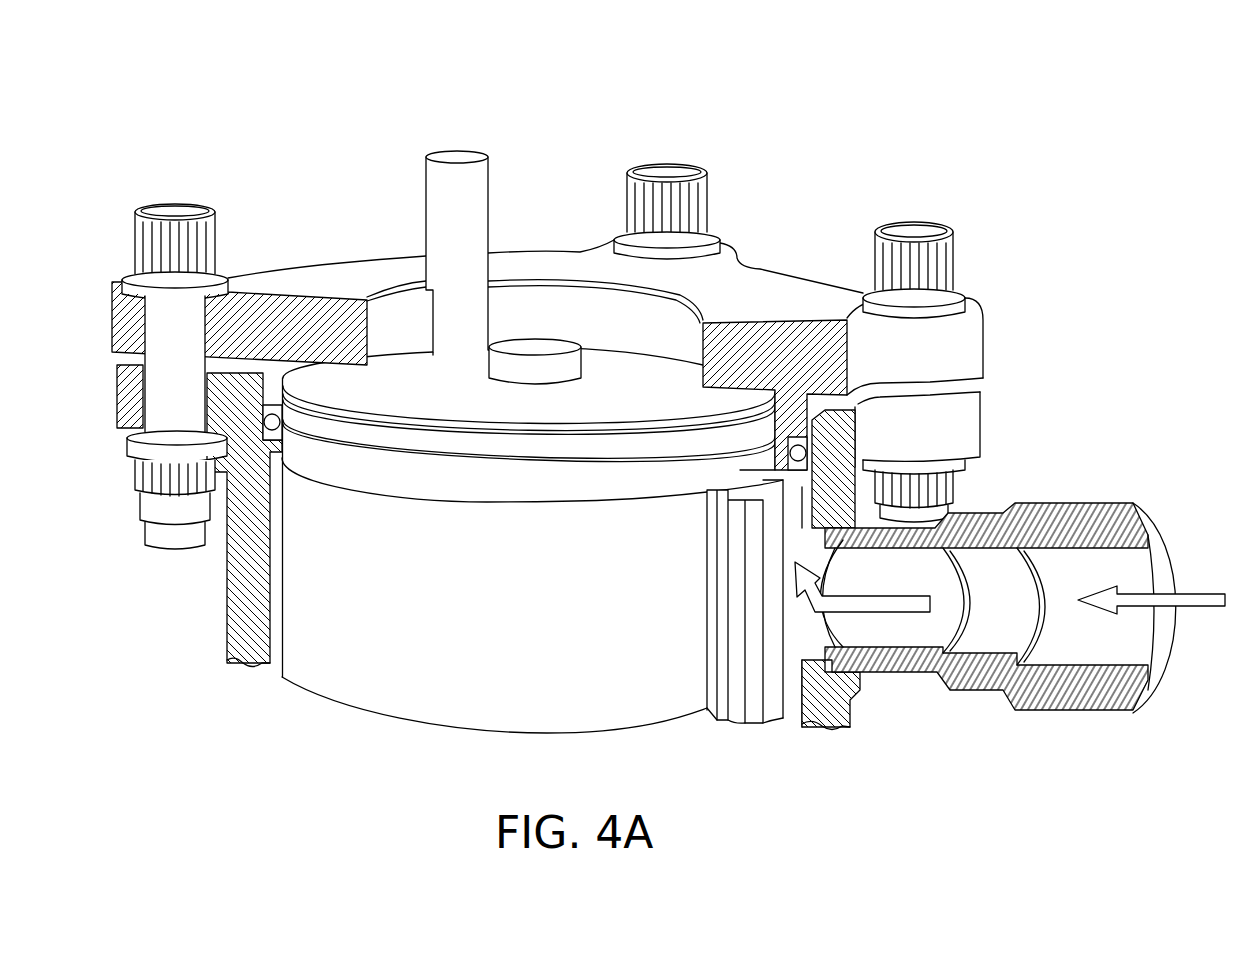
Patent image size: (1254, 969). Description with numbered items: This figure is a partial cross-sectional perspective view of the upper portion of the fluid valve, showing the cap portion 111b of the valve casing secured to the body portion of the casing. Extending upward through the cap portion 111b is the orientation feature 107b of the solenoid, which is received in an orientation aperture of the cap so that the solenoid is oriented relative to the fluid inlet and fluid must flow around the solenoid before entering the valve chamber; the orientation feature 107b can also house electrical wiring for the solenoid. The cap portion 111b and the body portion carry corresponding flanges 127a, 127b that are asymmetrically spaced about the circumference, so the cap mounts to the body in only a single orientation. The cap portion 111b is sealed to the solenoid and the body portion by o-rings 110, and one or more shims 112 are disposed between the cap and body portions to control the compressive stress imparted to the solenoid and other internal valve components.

The orientation feature 107b is at (477, 188).
The o-rings 110 is at (677, 437).
The cap portion 111b is at (756, 282).
The shims 112 is at (250, 380).
The flange 127a is at (985, 420).
The flange 127b is at (975, 340).